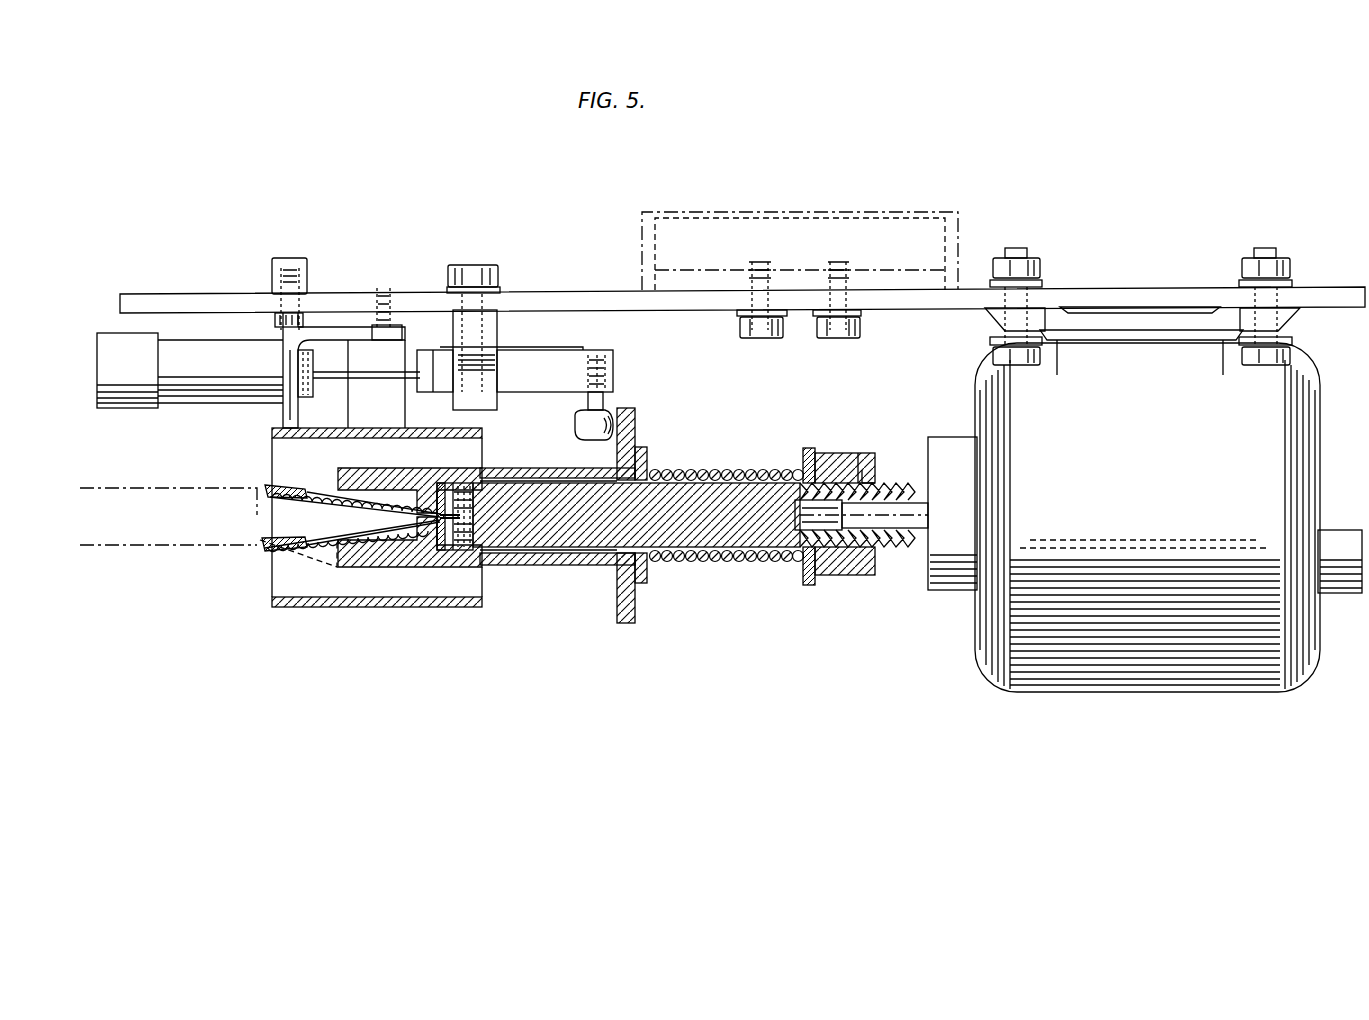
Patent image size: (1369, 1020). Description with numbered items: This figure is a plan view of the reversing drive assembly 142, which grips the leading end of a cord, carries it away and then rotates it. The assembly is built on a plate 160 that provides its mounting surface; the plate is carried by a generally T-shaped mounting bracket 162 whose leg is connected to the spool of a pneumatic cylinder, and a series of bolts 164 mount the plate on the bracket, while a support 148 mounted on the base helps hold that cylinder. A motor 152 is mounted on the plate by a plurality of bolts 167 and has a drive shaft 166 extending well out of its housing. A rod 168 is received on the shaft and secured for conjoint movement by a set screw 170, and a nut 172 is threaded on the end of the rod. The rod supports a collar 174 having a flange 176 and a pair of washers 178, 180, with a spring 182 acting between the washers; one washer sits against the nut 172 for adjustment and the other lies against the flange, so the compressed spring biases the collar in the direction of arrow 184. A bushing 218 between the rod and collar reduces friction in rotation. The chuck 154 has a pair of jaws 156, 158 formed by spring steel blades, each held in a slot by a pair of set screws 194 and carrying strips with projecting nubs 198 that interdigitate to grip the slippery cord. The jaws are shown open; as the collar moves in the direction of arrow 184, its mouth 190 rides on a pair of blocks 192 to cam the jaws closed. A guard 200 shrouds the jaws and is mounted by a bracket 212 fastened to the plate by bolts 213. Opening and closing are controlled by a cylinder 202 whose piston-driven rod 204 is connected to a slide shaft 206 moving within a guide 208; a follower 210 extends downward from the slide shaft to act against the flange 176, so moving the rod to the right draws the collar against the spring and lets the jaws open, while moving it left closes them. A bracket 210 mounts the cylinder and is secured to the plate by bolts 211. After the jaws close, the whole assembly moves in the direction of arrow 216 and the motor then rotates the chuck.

The reversing drive assembly 142 is at (800, 638).
The support 148 is at (153, 520).
The motor 152 is at (1073, 657).
The chuck 154 is at (256, 552).
The jaw 156 is at (323, 493).
The jaw 158 is at (330, 550).
The plate 160 is at (690, 298).
The mounting bracket 162 is at (962, 232).
The bolts 164 is at (833, 350).
The drive shaft 166 is at (893, 510).
The bolts 167 is at (1035, 264).
The rod 168 is at (697, 497).
The set screw 170 is at (860, 446).
The nut 172 is at (852, 575).
The collar 174 is at (593, 568).
The flange 176 is at (633, 418).
The washer 178 is at (800, 575).
The washer 180 is at (648, 458).
The spring 182 is at (755, 473).
The arrow 184 is at (707, 587).
The mouth 190 is at (357, 567).
The blocks 192 is at (277, 483).
The set screws 194 is at (473, 483).
The nubs 198 is at (265, 517).
The guard 200 is at (287, 607).
The cylinder 202 is at (208, 388).
The rod 204 is at (357, 370).
The slide shaft 206 is at (573, 358).
The guide 208 is at (488, 356).
The follower 210 is at (285, 358).
The bolts 211 is at (303, 280).
The bracket 212 is at (358, 407).
The bolts 213 is at (398, 350).
The arrow 216 is at (753, 192).
The bushing 218 is at (568, 468).